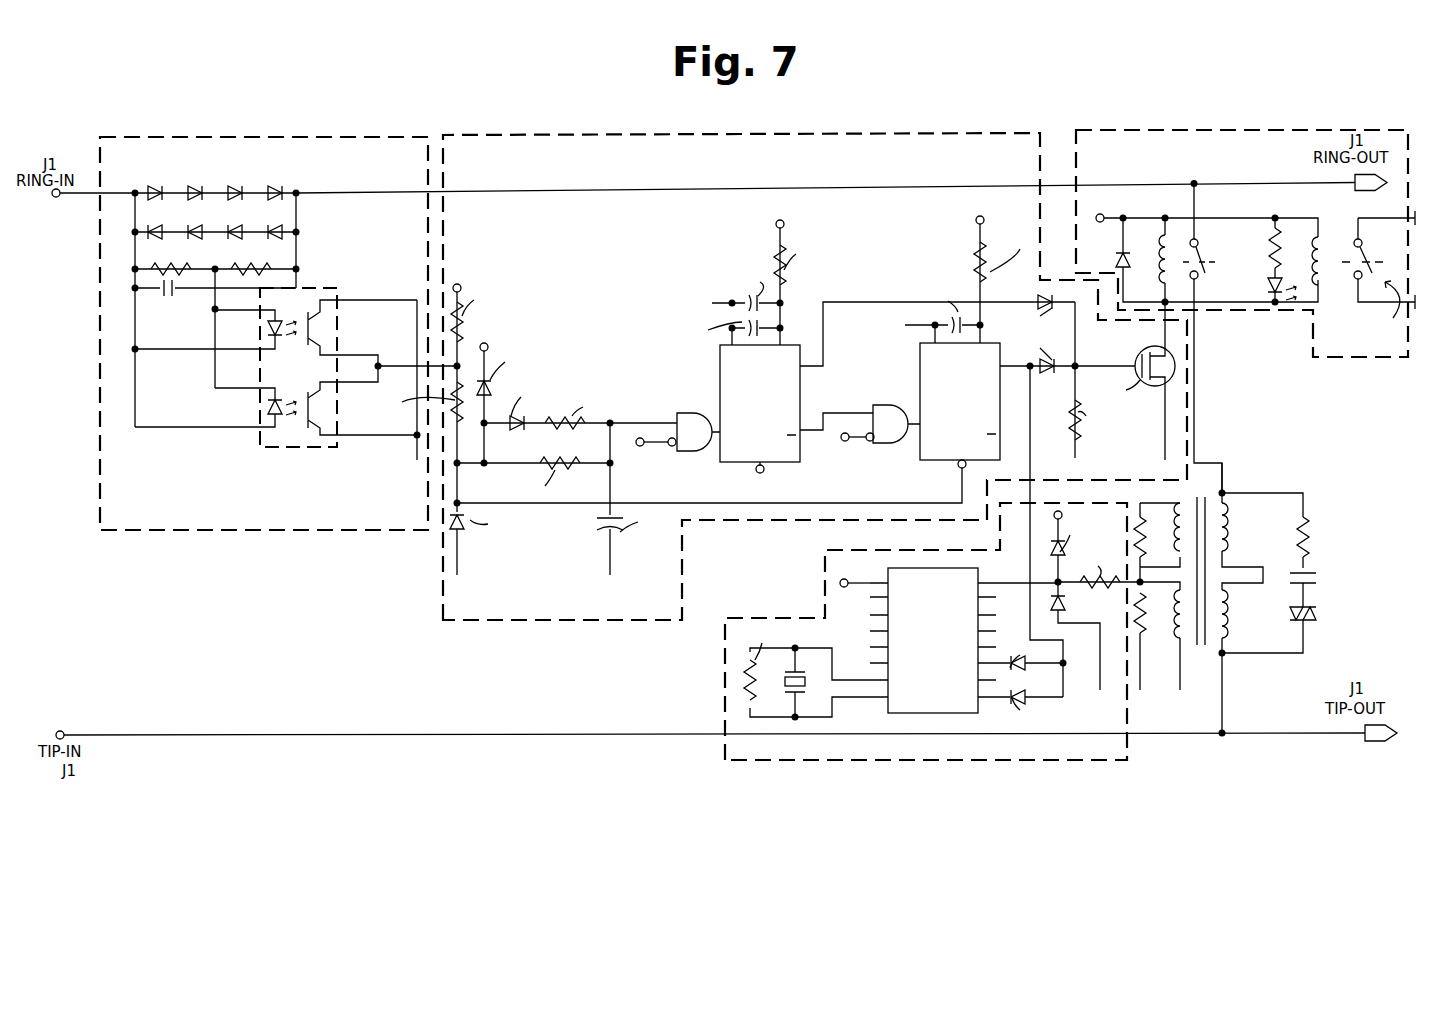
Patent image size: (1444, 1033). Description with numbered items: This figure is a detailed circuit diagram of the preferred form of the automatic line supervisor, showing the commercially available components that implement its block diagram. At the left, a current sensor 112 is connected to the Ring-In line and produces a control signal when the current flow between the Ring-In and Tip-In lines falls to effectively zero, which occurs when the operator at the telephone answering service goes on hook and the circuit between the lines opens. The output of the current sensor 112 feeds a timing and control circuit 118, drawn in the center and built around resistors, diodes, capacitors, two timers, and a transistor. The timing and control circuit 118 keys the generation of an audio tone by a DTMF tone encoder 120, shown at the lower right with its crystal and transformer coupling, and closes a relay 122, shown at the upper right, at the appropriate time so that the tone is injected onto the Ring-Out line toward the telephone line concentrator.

The current sensor 112 is at (100, 443).
The timing and control circuit 118 is at (673, 133).
The DTMF tone encoder 120 is at (752, 763).
The relay 122 is at (1200, 125).